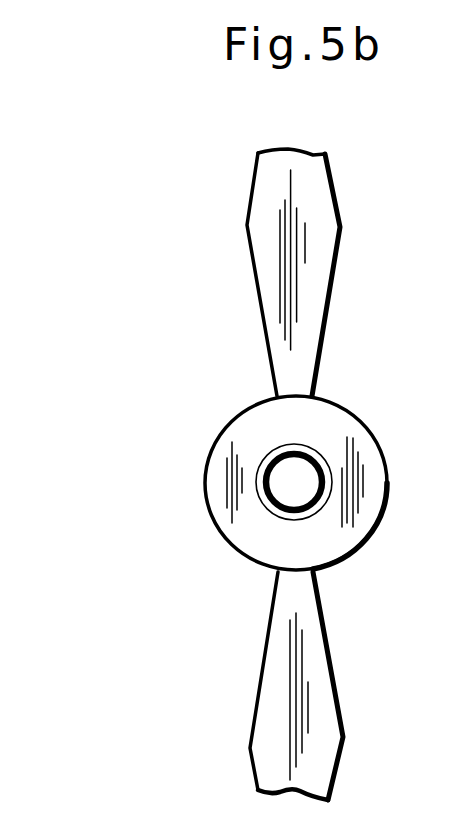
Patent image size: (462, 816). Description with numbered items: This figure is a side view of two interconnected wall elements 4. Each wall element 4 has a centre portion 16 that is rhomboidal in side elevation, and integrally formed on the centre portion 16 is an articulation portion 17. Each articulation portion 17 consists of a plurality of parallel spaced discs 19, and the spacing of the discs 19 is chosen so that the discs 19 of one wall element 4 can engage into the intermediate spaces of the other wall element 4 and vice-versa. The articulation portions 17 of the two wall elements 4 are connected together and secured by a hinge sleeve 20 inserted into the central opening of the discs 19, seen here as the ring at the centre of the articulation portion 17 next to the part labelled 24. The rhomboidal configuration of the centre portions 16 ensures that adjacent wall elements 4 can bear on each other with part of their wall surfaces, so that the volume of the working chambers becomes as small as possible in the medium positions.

The wall element 4 is at (337, 188).
The centre portion 16 is at (283, 282).
The articulation portion 17 is at (342, 400).
The disc 19 is at (355, 467).
The hinge sleeve 20 is at (264, 503).
The annular collar 24 is at (257, 481).